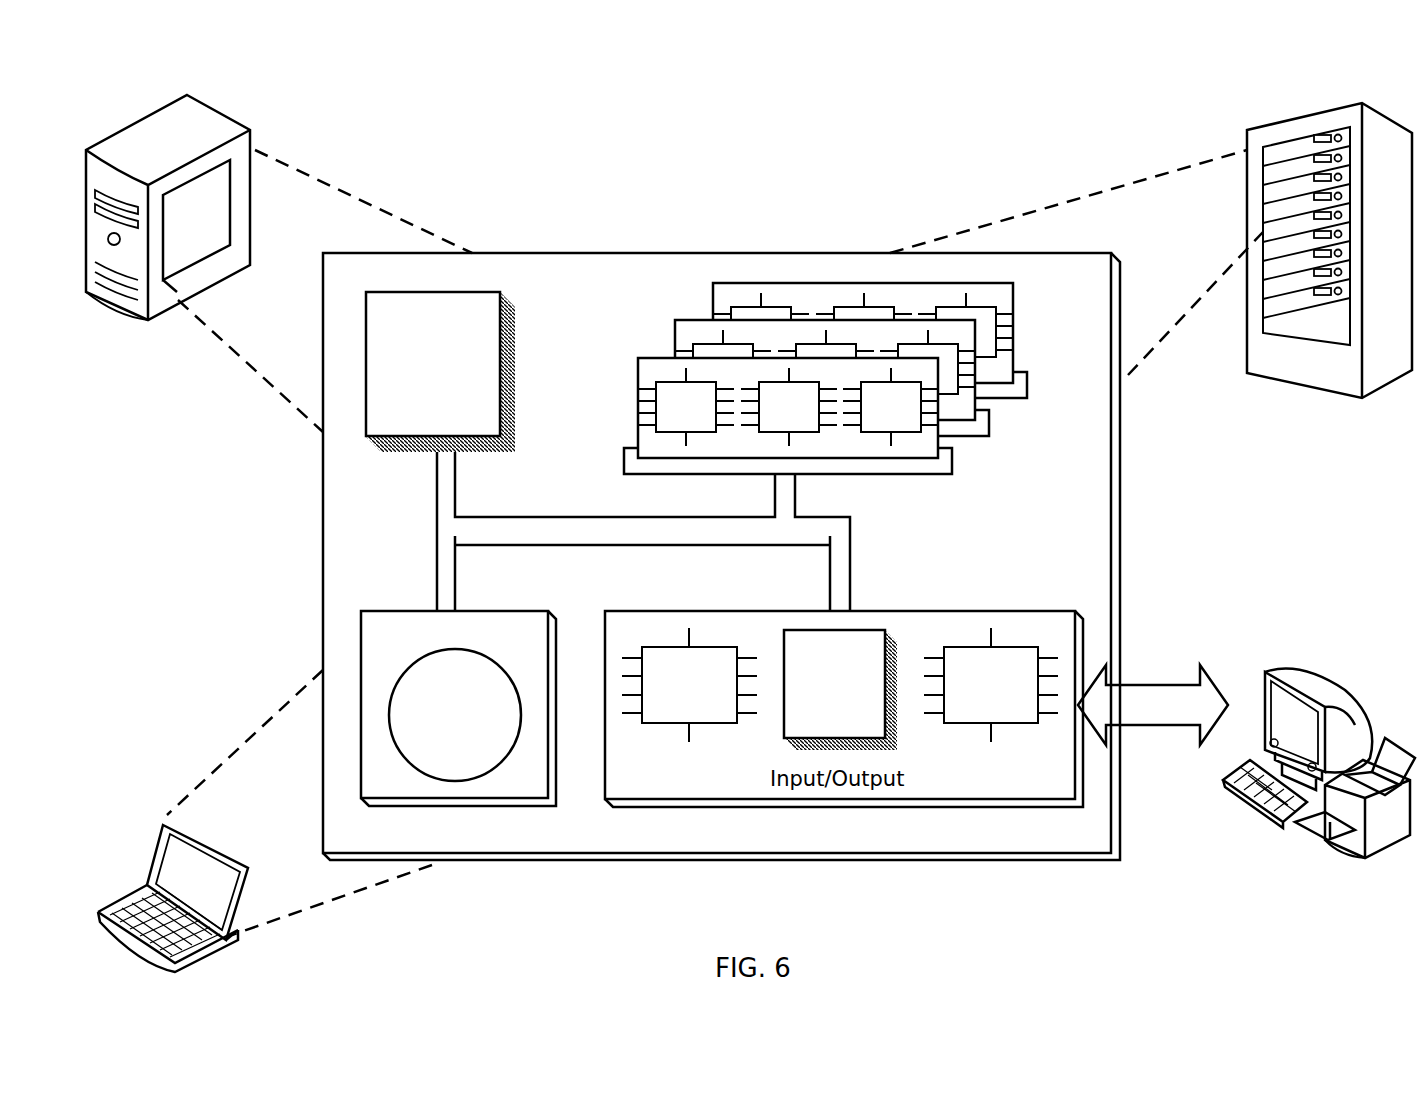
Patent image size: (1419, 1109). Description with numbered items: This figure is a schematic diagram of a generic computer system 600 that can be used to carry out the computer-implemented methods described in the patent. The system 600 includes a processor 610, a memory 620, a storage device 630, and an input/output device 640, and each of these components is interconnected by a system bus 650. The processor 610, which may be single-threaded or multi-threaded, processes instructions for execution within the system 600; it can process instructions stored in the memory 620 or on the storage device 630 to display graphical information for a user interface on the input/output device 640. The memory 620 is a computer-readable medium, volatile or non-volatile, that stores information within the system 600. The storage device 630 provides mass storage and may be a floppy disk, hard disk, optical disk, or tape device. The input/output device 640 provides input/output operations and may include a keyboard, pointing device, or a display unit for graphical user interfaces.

The computer system 600 is at (528, 118).
The processor 610 is at (440, 372).
The memory 620 is at (1024, 436).
The storage device 630 is at (458, 708).
The input/output device 640 is at (1262, 670).
The system bus 650 is at (633, 537).